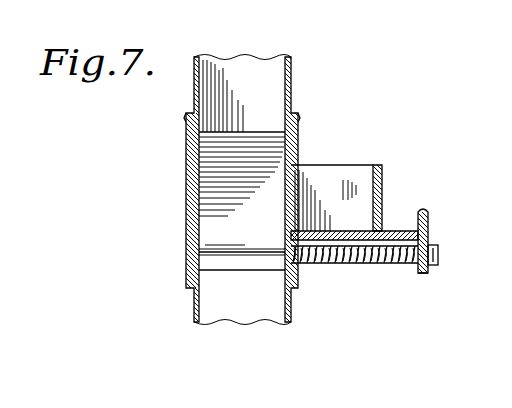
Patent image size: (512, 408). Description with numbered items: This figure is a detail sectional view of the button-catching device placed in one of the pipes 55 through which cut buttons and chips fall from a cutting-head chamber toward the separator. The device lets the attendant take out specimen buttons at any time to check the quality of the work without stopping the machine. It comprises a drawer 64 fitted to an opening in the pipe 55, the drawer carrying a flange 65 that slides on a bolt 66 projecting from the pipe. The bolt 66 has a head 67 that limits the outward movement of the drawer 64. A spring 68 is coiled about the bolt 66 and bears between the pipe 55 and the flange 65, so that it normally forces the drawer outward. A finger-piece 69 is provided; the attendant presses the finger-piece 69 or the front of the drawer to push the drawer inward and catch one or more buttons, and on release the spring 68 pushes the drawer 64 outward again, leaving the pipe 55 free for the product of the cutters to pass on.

The pipe 55 is at (271, 80).
The drawer 64 is at (354, 202).
The flange 65 is at (482, 278).
The bolt 66 is at (375, 264).
The head 67 is at (438, 250).
The spring 68 is at (337, 264).
The finger-piece 69 is at (426, 214).